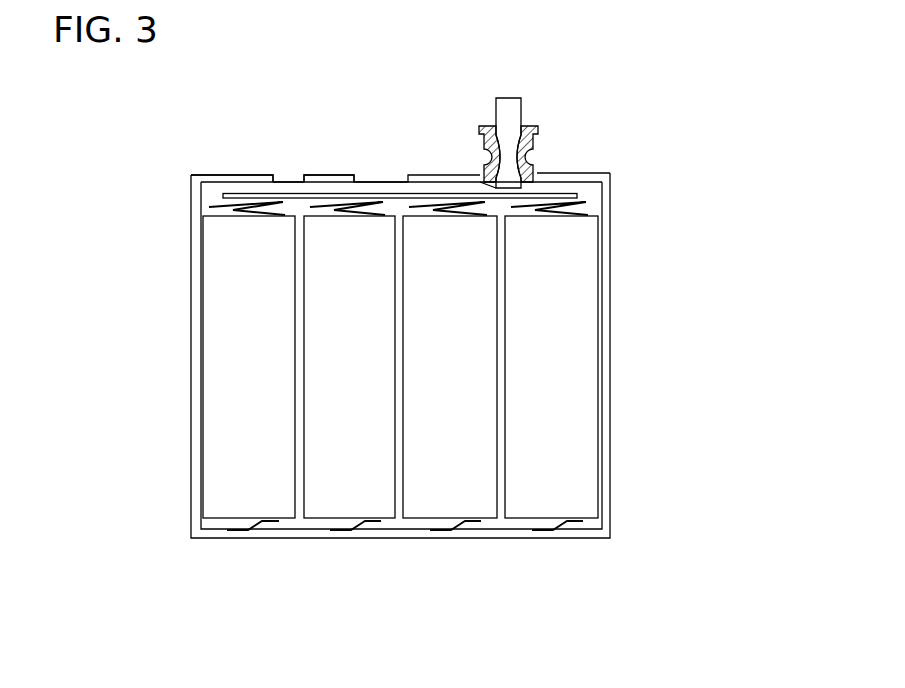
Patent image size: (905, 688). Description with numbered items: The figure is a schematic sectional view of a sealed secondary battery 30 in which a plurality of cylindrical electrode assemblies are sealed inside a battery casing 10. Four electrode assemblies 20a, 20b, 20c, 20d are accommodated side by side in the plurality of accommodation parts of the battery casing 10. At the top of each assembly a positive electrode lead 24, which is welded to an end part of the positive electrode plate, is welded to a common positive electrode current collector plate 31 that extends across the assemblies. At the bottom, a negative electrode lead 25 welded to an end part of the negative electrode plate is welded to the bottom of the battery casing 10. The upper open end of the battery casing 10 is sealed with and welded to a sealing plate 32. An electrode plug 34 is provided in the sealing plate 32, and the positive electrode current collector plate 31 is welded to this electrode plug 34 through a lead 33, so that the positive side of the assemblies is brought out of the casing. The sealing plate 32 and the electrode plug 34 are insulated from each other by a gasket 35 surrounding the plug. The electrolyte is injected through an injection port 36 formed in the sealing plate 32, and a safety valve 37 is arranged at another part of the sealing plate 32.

The sealed secondary battery 30 is at (697, 128).
The battery casing 10 is at (612, 312).
The sealing plate 32 is at (429, 177).
The injection port 36 is at (290, 177).
The safety valve 37 is at (375, 177).
The positive electrode current collector plate 31 is at (577, 196).
The electrode plug 34 is at (510, 108).
The gasket 35 is at (527, 127).
The lead 33 is at (486, 187).
The positive electrode lead 24 is at (209, 207).
The negative electrode lead 25 is at (255, 520).
The electrode assembly 20a is at (242, 490).
The electrode assembly 20b is at (352, 490).
The electrode assembly 20c is at (462, 490).
The electrode assembly 20d is at (558, 490).